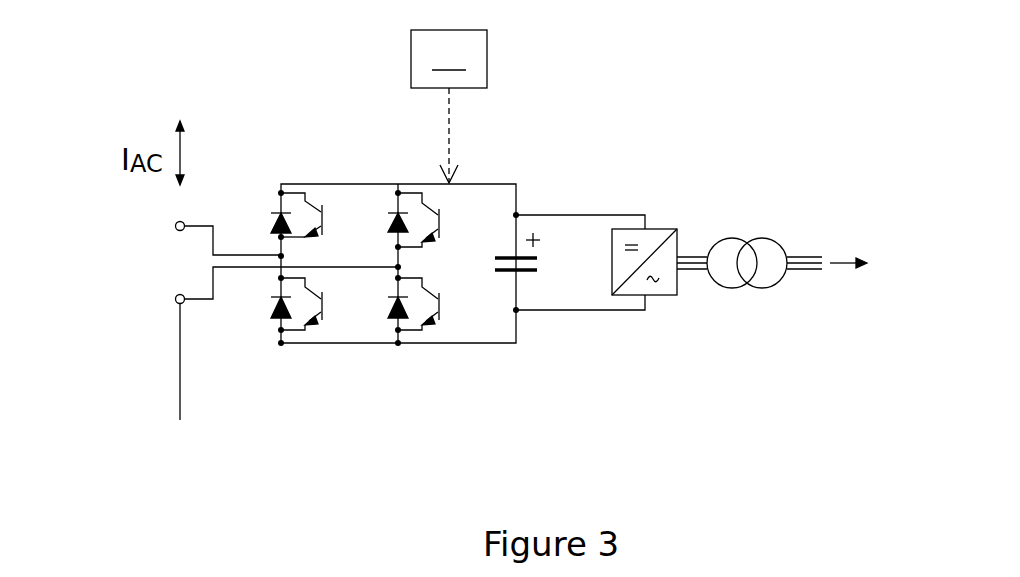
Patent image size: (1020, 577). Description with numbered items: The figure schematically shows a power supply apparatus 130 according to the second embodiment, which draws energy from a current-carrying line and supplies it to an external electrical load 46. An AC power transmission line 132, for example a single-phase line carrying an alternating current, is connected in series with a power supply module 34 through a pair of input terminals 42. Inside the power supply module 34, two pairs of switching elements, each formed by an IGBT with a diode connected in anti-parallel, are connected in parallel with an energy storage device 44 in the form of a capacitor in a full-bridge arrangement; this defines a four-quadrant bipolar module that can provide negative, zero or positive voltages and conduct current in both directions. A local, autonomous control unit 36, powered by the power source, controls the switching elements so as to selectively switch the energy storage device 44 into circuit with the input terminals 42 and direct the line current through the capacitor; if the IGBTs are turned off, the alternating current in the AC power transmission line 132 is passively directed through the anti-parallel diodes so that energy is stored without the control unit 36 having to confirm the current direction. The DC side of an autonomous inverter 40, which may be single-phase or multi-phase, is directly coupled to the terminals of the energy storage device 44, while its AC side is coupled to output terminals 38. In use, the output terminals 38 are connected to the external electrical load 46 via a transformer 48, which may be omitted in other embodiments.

The AC power transmission line 132 is at (155, 218).
The input terminals 42 is at (170, 231).
The power supply apparatus 130 is at (283, 382).
The power supply module 34 is at (455, 330).
The control unit 36 is at (449, 106).
The energy storage device 44 is at (530, 273).
The inverter 40 is at (651, 238).
The output terminals 38 is at (680, 248).
The transformer 48 is at (748, 262).
The external electrical load 46 is at (867, 268).